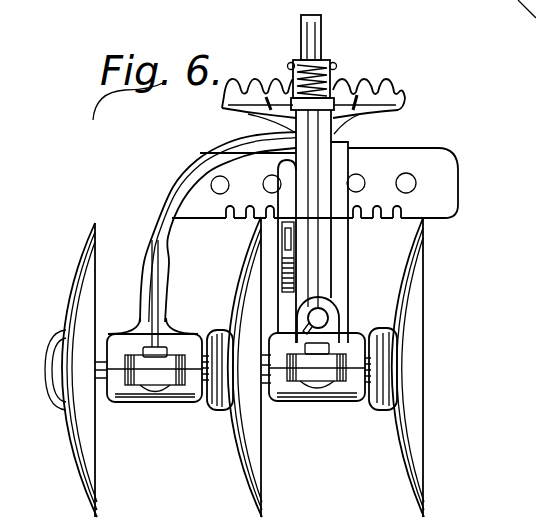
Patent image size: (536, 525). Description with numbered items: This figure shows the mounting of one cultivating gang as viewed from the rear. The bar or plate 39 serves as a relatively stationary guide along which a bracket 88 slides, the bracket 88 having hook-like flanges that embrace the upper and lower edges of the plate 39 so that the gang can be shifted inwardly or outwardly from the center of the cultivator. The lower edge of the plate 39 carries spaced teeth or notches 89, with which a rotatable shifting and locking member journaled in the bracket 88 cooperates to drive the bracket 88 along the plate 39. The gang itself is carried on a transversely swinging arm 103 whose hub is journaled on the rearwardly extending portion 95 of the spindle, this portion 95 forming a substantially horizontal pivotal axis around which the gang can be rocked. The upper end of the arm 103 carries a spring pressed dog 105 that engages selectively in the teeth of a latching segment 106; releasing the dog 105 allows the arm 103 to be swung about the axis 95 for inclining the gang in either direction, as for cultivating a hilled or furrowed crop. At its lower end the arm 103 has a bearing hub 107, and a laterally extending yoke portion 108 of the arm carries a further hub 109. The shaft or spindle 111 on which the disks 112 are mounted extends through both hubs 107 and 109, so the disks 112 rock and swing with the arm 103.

The bar or plate 39 is at (164, 213).
The bracket 88 is at (341, 165).
The teeth or notches 89 is at (251, 238).
The rearwardly extending portion of the spindle 95 is at (309, 318).
The transversely swinging arm 103 is at (331, 266).
The spring pressed dog 105 is at (322, 60).
The latching segment 106 is at (350, 85).
The bearing hub 107 is at (353, 404).
The yoke portion 108 is at (158, 247).
The hub 109 is at (107, 405).
The shaft or spindle 111 is at (264, 412).
The disks 112 is at (100, 495).